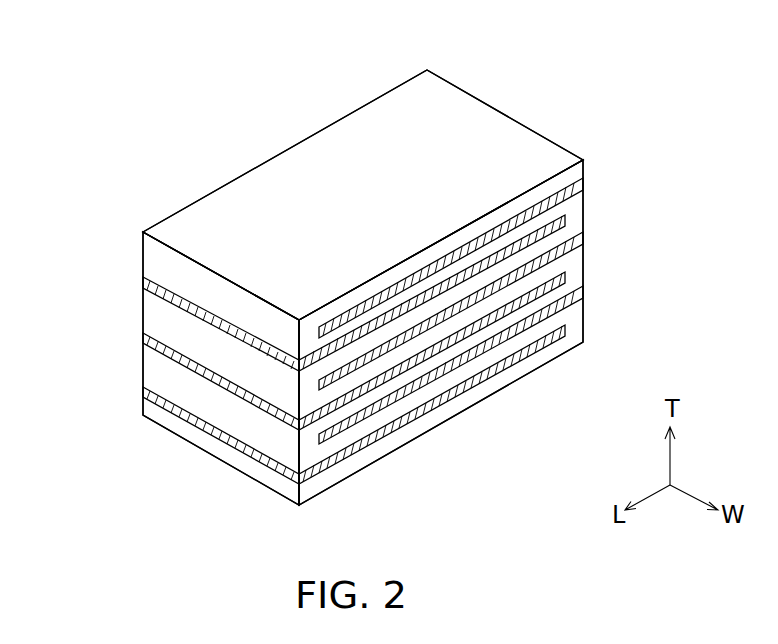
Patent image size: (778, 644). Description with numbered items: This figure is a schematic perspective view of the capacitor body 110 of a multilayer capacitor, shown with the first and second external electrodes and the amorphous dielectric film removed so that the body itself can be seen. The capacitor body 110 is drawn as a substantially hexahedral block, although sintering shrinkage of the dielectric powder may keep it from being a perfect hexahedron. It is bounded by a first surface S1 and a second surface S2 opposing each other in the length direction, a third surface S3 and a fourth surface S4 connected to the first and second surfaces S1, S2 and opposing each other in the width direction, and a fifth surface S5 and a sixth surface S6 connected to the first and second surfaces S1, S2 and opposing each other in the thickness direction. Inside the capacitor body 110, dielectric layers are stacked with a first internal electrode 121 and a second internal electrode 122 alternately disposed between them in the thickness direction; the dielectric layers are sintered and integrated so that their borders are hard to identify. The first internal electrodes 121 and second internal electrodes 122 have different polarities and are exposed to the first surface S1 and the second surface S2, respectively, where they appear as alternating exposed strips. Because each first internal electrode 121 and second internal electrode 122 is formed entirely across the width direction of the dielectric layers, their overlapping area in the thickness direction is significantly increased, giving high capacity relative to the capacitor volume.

The capacitor body 110 is at (162, 262).
The first internal electrode 121 is at (160, 300).
The second internal electrode 122 is at (563, 201).
The first surface S1 is at (143, 366).
The second surface S2 is at (473, 127).
The third surface S3 is at (248, 214).
The fourth surface S4 is at (492, 383).
The fifth surface S5 is at (342, 150).
The sixth surface S6 is at (220, 452).